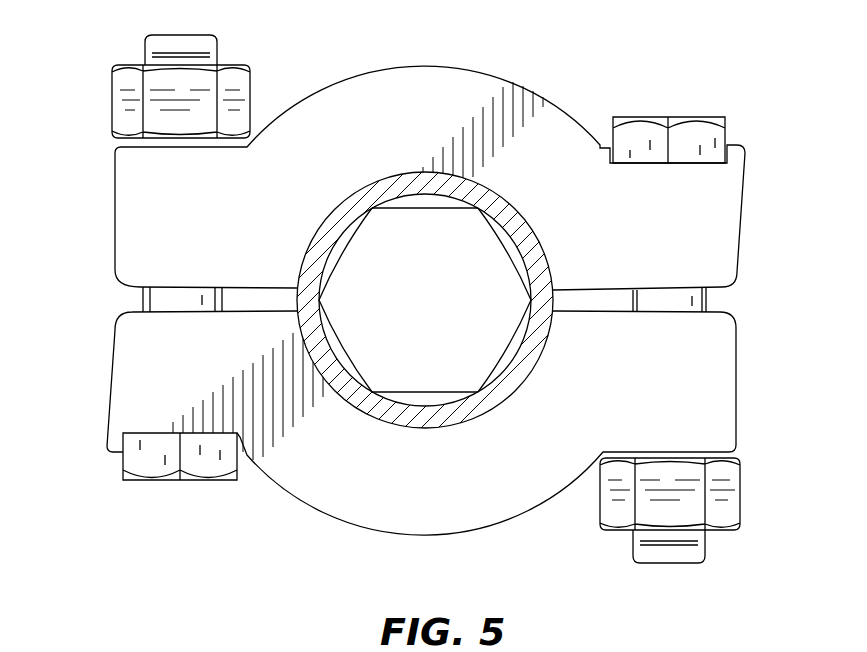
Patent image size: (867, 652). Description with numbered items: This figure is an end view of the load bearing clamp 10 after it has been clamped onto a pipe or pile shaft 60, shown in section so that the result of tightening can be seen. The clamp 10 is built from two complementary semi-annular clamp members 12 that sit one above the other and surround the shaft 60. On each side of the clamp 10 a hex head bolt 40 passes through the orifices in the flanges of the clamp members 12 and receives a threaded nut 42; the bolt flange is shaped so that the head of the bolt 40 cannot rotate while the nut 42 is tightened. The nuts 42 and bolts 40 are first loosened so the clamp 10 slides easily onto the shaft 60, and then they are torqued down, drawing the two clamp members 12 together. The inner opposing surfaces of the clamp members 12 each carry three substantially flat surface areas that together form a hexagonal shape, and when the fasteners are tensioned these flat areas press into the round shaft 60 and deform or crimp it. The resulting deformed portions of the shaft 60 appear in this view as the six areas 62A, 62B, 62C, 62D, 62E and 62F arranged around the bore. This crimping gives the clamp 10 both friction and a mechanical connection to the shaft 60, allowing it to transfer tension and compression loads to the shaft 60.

The clamp 10 is at (510, 100).
The clamp member 12 is at (434, 86).
The hex head bolt 40 is at (687, 132).
The threaded nut 42 is at (132, 85).
The shaft 60 is at (373, 194).
The deformed area 62A is at (342, 258).
The deformed area 62B is at (423, 204).
The deformed area 62C is at (503, 243).
The deformed area 62D is at (503, 347).
The deformed area 62E is at (422, 393).
The deformed area 62F is at (351, 357).